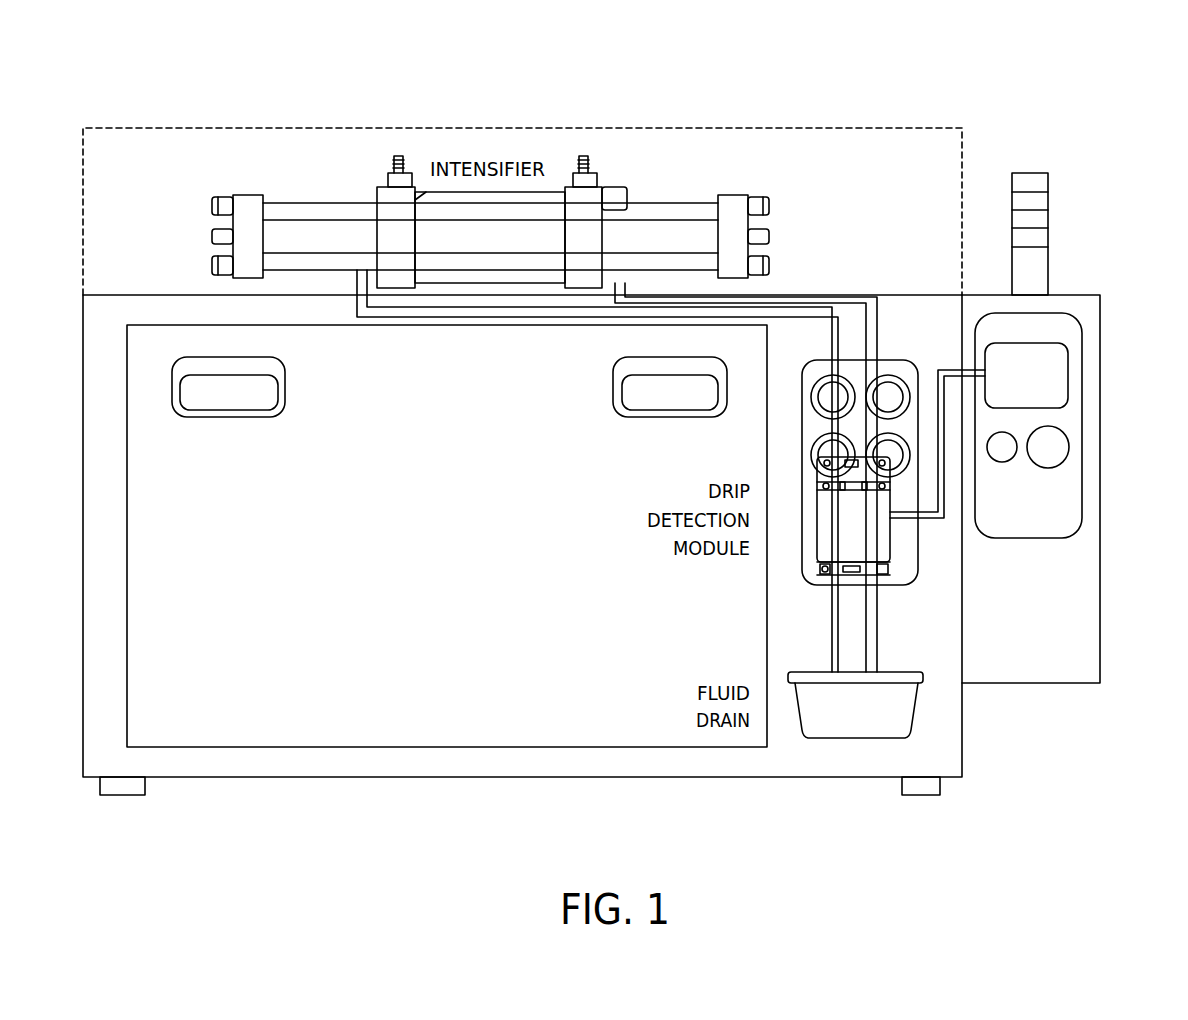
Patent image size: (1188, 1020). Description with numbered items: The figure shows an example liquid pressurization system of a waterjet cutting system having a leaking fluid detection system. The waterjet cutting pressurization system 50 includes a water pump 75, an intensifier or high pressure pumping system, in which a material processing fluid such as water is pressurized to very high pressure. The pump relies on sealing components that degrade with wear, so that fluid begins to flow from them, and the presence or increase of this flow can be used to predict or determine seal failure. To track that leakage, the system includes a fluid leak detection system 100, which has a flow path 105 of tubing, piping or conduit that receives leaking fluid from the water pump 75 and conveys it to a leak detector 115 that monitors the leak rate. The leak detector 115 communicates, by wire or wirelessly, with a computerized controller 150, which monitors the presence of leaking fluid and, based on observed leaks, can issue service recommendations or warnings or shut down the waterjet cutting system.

The waterjet cutting pressurization system 50 is at (992, 98).
The water pump 75 is at (540, 215).
The flow path 105 is at (848, 296).
The fluid leak detection system 100 is at (885, 538).
The leak detector 115 is at (826, 472).
The computerized controller 150 is at (1068, 417).